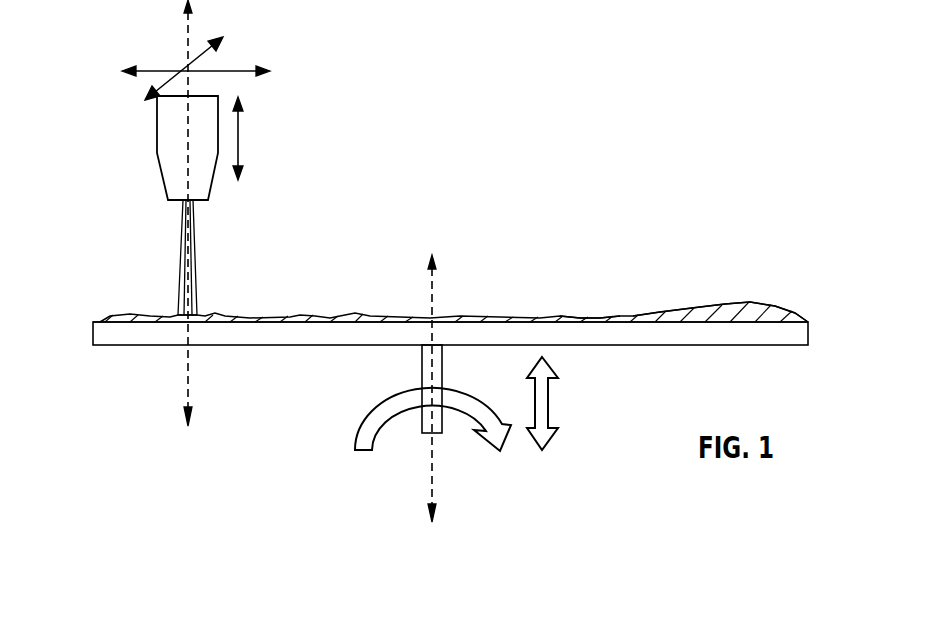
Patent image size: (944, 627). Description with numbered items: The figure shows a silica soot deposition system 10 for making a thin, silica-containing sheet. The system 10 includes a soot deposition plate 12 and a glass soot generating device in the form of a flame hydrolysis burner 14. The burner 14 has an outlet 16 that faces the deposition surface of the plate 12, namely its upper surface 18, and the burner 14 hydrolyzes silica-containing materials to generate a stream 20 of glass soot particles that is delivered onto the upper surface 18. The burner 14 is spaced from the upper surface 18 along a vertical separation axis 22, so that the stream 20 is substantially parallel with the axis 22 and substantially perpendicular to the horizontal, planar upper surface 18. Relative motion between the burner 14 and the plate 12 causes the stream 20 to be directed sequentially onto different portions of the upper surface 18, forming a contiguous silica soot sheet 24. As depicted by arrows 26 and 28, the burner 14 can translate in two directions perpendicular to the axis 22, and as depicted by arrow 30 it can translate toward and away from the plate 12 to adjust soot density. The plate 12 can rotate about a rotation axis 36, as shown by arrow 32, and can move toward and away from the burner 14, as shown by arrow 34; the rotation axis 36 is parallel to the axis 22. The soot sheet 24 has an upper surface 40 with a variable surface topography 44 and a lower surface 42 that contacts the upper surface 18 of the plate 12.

The system 10 is at (636, 96).
The plate 12 is at (810, 332).
The flame hydrolysis burner 14 is at (158, 142).
The outlet 16 is at (177, 202).
The upper surface 18 is at (719, 313).
The stream 20 is at (195, 265).
The axis 22 is at (183, 45).
The silica soot sheet 24 is at (462, 318).
The arrow 26 is at (244, 70).
The arrow 28 is at (205, 52).
The arrow 30 is at (238, 137).
The arrow 32 is at (353, 437).
The arrow 34 is at (548, 408).
The rotation axis 36 is at (432, 467).
The upper surface 40 is at (779, 297).
The lower surface 42 is at (753, 333).
The surface topography 44 is at (603, 302).